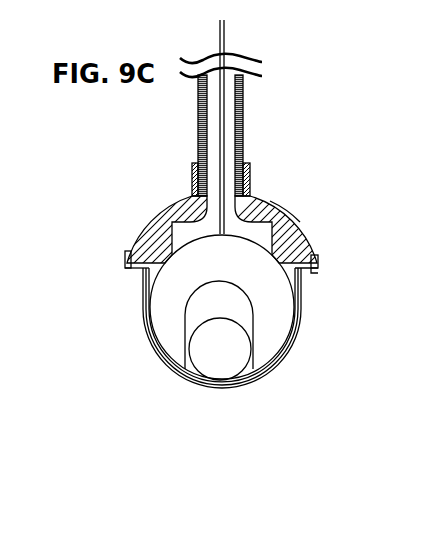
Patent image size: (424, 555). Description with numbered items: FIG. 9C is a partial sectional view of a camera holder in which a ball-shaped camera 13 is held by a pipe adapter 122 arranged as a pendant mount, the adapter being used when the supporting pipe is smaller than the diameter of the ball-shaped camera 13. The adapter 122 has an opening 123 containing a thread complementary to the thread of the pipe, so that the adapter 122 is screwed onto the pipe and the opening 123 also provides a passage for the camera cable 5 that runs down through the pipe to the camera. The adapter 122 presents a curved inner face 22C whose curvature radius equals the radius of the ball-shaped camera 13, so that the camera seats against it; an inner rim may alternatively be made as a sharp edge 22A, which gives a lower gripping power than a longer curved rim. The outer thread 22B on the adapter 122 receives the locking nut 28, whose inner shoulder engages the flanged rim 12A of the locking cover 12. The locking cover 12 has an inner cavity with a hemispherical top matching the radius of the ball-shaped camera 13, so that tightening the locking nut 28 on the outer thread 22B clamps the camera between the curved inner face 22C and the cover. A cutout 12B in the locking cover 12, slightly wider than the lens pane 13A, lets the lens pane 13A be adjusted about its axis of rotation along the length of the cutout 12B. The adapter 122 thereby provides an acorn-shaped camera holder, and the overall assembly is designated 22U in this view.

The camera cable 5 is at (225, 32).
The locking cover 12 is at (140, 312).
The flanged rim 12A is at (128, 262).
The cutout 12B is at (185, 318).
The ball-shaped camera 13 is at (262, 353).
The lens pane 13A is at (220, 368).
The sharp edge 22A is at (316, 229).
The outer thread 22B is at (320, 262).
The curved inner face 22C is at (160, 250).
The upper housing unit 22U is at (124, 135).
The locking nut 28 is at (315, 276).
The pipe adapter 122 is at (280, 195).
The opening 123 is at (248, 162).